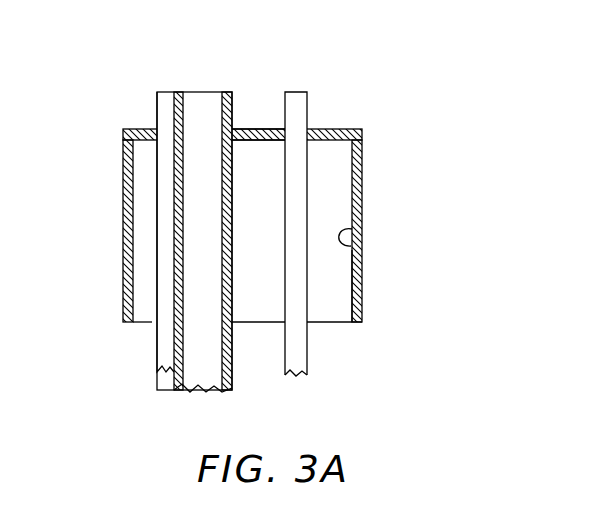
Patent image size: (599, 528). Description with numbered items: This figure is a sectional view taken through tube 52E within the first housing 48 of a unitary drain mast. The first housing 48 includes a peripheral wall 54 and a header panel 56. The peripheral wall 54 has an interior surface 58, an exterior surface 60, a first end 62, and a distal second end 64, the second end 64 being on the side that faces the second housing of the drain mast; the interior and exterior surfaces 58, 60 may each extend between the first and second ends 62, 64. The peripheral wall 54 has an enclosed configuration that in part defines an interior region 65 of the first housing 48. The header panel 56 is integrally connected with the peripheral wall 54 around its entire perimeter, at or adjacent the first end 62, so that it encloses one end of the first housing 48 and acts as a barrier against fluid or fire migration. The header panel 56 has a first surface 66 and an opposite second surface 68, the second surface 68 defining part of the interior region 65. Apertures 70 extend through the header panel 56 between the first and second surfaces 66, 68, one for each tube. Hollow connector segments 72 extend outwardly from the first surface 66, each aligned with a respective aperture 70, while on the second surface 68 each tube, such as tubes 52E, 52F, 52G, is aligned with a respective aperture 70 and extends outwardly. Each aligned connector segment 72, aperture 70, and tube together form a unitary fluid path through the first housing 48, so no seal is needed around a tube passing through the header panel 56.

The first housing 48 is at (271, 205).
The peripheral wall 54 is at (365, 195).
The header panel 56 is at (142, 120).
The interior surface 58 is at (342, 245).
The exterior surface 60 is at (362, 261).
The first end 62 is at (350, 128).
The second end 64 is at (354, 324).
The interior region 65 is at (273, 277).
The first surface 66 is at (321, 127).
The second surface 68 is at (248, 141).
The aperture 70 is at (197, 142).
The connector segment 72 is at (210, 92).
The tube 52E is at (195, 352).
The tube 52F is at (165, 244).
The tube 52G is at (310, 291).